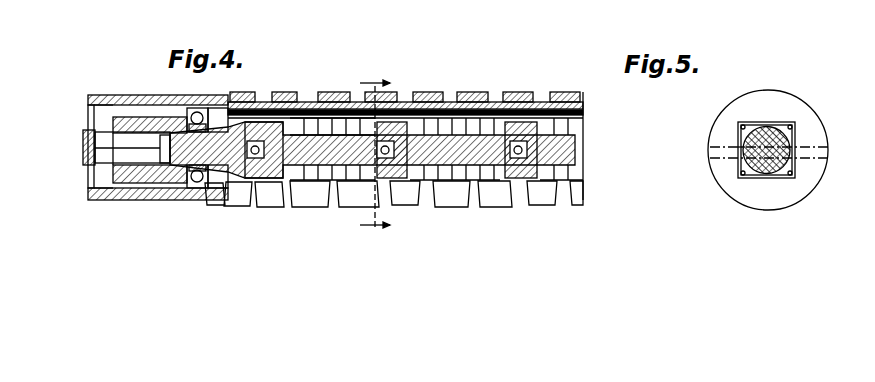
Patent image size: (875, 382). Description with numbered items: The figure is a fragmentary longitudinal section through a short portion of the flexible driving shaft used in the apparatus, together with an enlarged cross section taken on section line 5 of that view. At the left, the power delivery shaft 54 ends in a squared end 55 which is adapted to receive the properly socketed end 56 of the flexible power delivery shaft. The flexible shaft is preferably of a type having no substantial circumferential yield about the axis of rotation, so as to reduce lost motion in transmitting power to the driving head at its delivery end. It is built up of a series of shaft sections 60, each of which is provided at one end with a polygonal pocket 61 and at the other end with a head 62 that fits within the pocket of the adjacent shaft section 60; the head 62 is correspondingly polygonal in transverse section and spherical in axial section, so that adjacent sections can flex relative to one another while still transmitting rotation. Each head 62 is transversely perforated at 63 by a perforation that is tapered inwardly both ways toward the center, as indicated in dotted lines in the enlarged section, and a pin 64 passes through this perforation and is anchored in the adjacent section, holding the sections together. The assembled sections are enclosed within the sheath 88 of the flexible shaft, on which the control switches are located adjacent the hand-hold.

In FIG. 4, the section line 5— 5 is at (375, 155).
In FIG. 4, the power delivery shaft 54 is at (86, 157).
In FIG. 4, the squared end 55 is at (110, 140).
In FIG. 4, the socketed end 56 is at (139, 118).
In FIG. 4, the shaft section 60 is at (320, 128).
In FIG. 5, the shaft section 60 is at (806, 121).
In FIG. 4, the polygonal pocket 61 is at (297, 105).
In FIG. 5, the polygonal pocket 61 is at (793, 167).
In FIG. 4, the head 62 is at (415, 122).
In FIG. 5, the head 62 is at (753, 180).
In FIG. 5, the perforation 63 is at (778, 128).
In FIG. 4, the pin 64 is at (250, 158).
In FIG. 5, the pin 64 is at (723, 144).
In FIG. 4, the sheath 88 is at (540, 117).